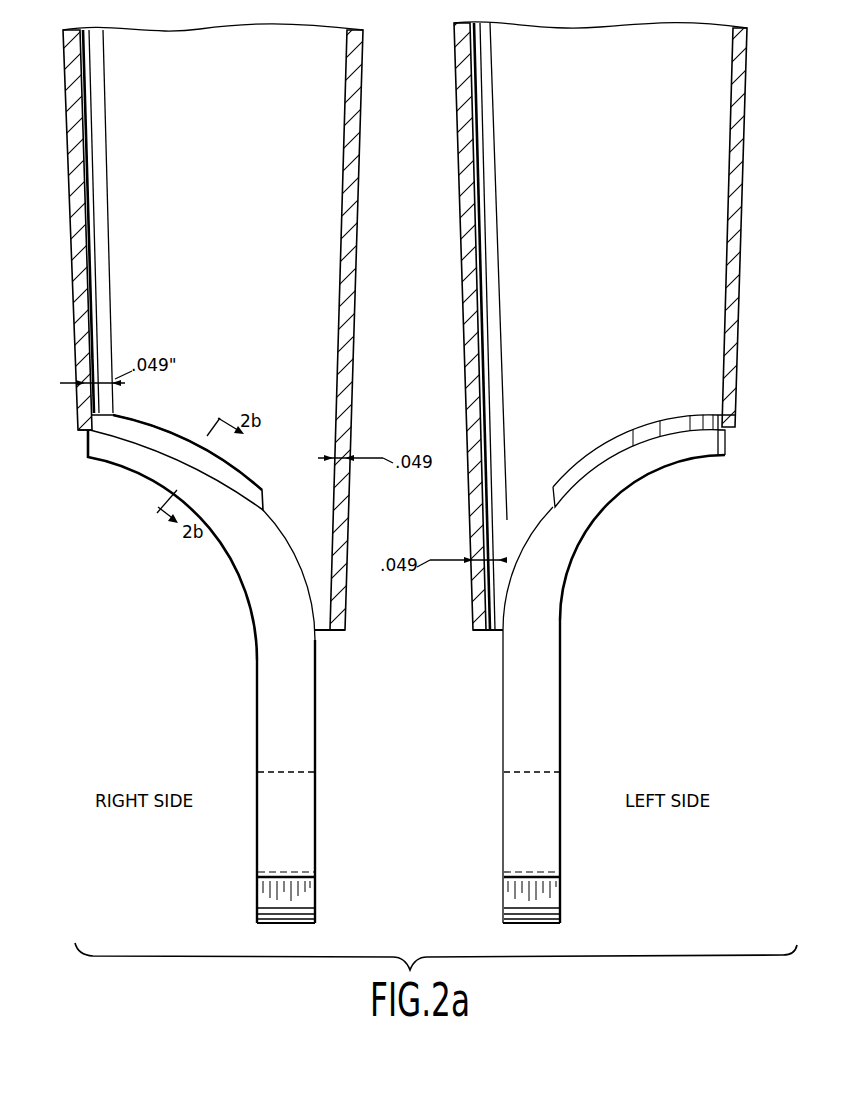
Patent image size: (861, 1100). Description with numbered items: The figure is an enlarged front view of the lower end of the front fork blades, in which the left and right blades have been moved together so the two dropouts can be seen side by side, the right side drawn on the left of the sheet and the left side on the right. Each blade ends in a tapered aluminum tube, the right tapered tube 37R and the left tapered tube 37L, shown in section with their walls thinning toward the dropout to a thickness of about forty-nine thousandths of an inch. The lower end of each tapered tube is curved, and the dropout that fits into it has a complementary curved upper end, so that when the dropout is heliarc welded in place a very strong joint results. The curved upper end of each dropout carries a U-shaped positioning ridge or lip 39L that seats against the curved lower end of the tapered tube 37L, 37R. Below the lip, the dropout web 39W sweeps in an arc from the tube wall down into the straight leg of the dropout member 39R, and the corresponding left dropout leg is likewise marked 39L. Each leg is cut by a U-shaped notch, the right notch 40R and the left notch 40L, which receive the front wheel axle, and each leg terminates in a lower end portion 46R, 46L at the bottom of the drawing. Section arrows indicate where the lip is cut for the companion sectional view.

The tapered tube (right) 37R is at (118, 318).
The tapered tube (left) 37L is at (695, 308).
The U-shaped positioning ridge or lip 39L is at (167, 423).
The dropout web 39W is at (295, 558).
The dropout member (right) 39R is at (317, 670).
The U-shaped notch (right) 40R is at (315, 757).
The U-shaped notch (left) 40L is at (502, 760).
The dropout lower end portion (right) 46R is at (300, 892).
The dropout lower end portion (left) 46L is at (515, 893).